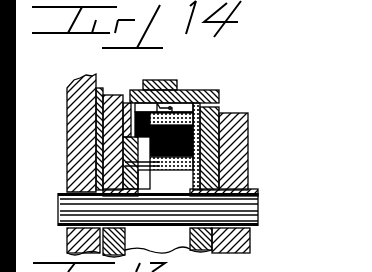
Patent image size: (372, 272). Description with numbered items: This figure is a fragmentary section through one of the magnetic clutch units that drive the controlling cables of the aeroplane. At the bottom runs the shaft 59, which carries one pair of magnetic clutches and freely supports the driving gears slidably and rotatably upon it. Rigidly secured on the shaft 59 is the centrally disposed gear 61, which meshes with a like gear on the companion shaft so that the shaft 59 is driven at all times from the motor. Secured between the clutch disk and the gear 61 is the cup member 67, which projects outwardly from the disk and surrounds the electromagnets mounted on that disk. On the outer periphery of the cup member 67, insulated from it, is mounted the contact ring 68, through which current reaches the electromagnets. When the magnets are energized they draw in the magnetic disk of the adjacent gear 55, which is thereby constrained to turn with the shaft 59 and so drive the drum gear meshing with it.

The gear 55 is at (245, 152).
The shaft 59 is at (258, 206).
The central gear 61 is at (82, 181).
The cup member 67 is at (131, 99).
The contact ring 68 is at (97, 103).